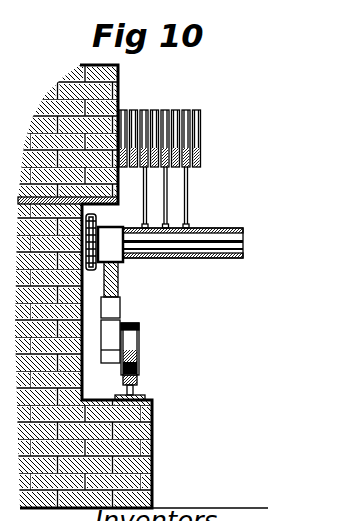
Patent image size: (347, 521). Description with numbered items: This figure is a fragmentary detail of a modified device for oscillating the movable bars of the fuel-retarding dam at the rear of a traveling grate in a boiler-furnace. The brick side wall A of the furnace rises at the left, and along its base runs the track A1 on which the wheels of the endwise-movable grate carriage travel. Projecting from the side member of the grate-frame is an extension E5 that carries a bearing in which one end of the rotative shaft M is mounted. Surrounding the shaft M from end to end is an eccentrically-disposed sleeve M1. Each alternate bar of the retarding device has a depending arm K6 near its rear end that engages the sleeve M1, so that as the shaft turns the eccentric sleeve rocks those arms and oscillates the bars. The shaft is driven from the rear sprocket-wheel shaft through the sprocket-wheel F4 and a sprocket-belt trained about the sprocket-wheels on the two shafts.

The side wall A is at (118, 82).
The depending arm K6 is at (190, 188).
The rotative shaft M is at (208, 258).
The eccentrically-disposed sleeve M1 is at (226, 228).
The sprocket-wheel F4 is at (94, 215).
The extension E5 is at (118, 255).
The track A1 is at (137, 383).